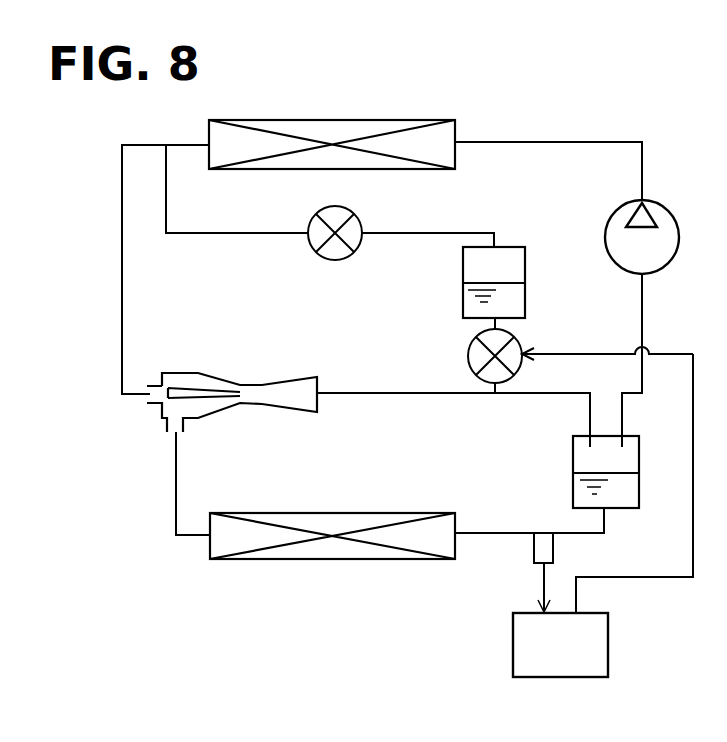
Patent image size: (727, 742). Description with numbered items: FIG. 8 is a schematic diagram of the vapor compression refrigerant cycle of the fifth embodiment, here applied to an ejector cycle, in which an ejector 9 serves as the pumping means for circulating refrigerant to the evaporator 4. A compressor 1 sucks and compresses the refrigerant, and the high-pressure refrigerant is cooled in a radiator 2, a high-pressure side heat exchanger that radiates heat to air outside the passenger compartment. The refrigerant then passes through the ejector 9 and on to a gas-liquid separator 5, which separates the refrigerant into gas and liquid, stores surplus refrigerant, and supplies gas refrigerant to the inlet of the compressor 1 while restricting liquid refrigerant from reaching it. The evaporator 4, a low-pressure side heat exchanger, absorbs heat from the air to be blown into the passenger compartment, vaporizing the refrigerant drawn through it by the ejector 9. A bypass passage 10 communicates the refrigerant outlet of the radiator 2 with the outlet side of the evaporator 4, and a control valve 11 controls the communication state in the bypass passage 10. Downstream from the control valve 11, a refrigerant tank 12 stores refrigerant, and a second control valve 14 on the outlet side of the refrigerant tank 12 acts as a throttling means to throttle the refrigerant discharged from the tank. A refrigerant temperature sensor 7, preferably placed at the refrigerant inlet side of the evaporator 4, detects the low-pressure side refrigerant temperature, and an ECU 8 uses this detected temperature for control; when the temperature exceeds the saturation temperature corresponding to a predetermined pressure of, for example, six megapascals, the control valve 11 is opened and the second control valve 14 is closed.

The compressor 1 is at (680, 237).
The radiator 2 is at (390, 118).
The evaporator 4 is at (392, 511).
The gas-liquid separator 5 is at (640, 478).
The refrigerant temperature sensor 7 is at (533, 556).
The ECU 8 is at (610, 645).
The ejector 9 is at (262, 383).
The bypass passage 10 is at (462, 230).
The control valve 11 is at (340, 208).
The refrigerant tank 12 is at (527, 286).
The second control valve 14 is at (512, 334).